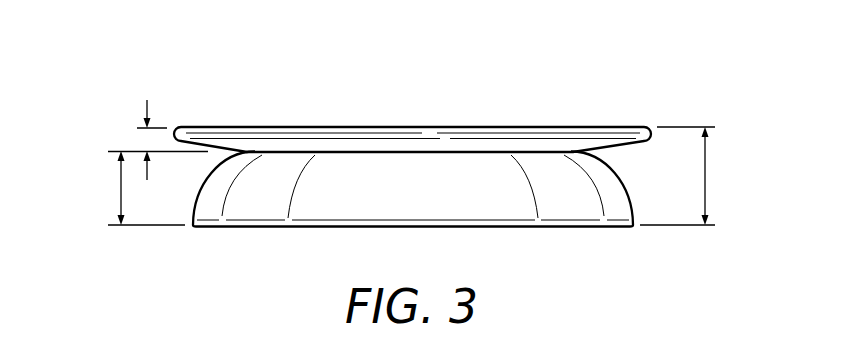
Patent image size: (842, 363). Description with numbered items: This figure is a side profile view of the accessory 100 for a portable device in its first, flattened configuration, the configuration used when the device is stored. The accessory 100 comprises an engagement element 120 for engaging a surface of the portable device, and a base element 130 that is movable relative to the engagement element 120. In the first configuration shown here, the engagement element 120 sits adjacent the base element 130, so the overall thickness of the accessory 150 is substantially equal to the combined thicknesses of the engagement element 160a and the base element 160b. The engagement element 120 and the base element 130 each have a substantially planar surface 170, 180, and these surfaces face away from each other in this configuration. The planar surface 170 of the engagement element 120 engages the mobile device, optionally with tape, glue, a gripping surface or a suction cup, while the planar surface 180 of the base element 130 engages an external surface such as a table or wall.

The accessory 100 is at (673, 105).
The engagement element 120 is at (282, 127).
The base element 130 is at (210, 193).
The overall thickness of the accessory 150 is at (705, 176).
The thickness of the engagement element 160a is at (147, 102).
The thickness of the base element 160b is at (121, 191).
The planar surface of the engagement element 170 is at (555, 127).
The planar surface of the base element 180 is at (313, 228).